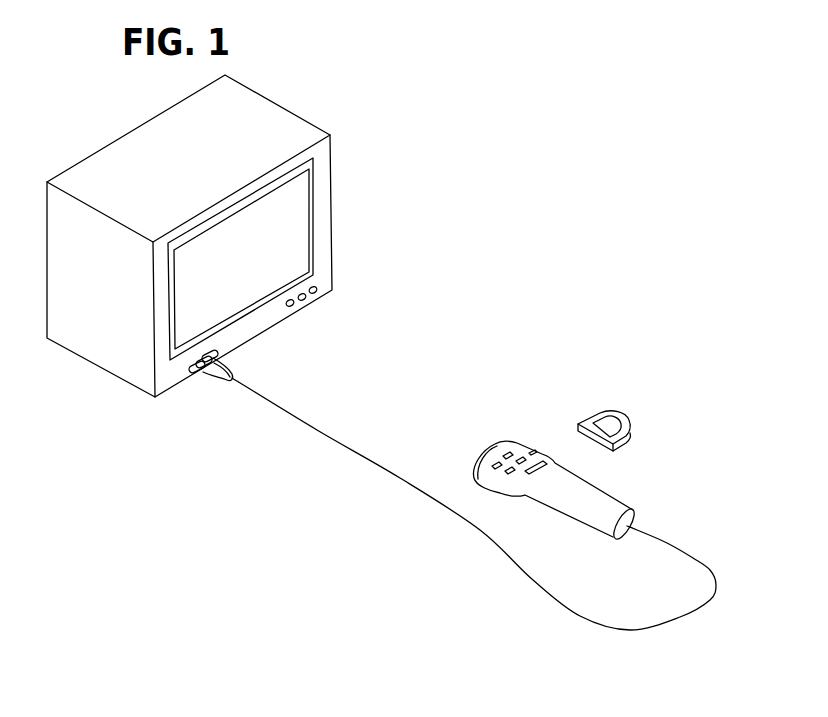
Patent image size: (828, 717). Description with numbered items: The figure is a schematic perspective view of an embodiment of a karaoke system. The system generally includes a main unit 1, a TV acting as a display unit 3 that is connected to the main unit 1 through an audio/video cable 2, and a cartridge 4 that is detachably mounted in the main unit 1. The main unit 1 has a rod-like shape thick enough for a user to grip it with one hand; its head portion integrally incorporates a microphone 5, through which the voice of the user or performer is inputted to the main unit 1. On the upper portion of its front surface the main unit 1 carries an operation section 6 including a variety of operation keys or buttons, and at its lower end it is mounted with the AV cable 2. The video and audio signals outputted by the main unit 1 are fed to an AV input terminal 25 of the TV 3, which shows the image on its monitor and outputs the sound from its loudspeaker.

The main unit 1 is at (564, 447).
The audio/video cable 2 is at (533, 580).
The display unit 3 is at (252, 128).
The cartridge 4 is at (610, 430).
The microphone 5 is at (490, 448).
The operation section 6 is at (522, 450).
The AV input terminal 25 is at (196, 373).